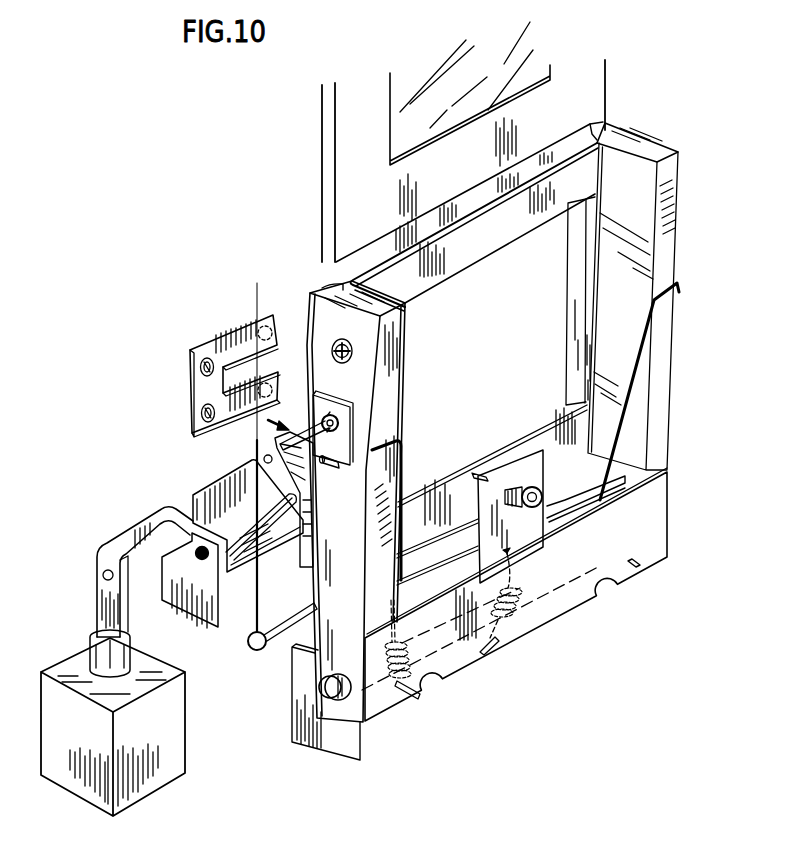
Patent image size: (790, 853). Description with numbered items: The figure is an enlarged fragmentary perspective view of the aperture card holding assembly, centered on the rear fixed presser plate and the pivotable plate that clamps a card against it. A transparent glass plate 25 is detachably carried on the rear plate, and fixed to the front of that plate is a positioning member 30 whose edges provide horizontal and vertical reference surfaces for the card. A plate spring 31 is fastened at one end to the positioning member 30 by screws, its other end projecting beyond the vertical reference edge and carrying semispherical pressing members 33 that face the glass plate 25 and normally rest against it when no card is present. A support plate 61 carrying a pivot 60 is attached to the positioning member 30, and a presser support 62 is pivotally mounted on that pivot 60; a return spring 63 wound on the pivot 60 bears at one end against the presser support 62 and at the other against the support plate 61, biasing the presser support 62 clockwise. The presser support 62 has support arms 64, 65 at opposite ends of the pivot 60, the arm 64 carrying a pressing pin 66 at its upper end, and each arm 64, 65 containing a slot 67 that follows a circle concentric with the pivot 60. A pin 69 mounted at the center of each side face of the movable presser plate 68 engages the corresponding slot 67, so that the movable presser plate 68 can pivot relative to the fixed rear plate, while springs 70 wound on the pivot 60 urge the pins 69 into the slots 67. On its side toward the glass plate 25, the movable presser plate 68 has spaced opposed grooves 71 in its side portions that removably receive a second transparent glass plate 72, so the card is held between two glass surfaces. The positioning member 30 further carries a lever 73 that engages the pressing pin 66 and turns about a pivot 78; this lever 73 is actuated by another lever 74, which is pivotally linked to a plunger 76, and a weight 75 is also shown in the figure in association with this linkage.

The transparent glass plate 25 is at (293, 303).
The positioning member 30 is at (245, 724).
The plate spring 31 is at (190, 386).
The pressing member 33 is at (254, 357).
The pivot 60 is at (333, 700).
The support plate 61 is at (298, 736).
The presser support 62 is at (555, 611).
The return spring 63 is at (487, 640).
The support arm 64 is at (289, 645).
The support arm 65 is at (670, 472).
The pressing pin 66 is at (320, 406).
The slot 67 is at (342, 496).
The movable presser plate 68 is at (390, 367).
The pin 69 is at (327, 467).
The spring 70 is at (404, 471).
The groove 71 is at (580, 119).
The transparent glass plate 72 is at (491, 84).
The lever 73 is at (265, 456).
The lever 74 is at (136, 527).
The weight 75 is at (85, 746).
The plunger 76 is at (90, 633).
The pivot 78 is at (238, 524).